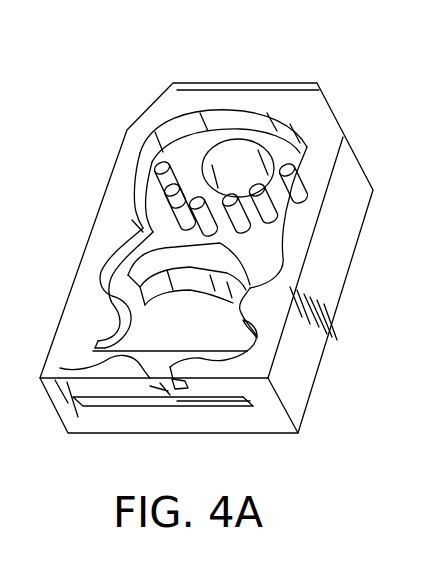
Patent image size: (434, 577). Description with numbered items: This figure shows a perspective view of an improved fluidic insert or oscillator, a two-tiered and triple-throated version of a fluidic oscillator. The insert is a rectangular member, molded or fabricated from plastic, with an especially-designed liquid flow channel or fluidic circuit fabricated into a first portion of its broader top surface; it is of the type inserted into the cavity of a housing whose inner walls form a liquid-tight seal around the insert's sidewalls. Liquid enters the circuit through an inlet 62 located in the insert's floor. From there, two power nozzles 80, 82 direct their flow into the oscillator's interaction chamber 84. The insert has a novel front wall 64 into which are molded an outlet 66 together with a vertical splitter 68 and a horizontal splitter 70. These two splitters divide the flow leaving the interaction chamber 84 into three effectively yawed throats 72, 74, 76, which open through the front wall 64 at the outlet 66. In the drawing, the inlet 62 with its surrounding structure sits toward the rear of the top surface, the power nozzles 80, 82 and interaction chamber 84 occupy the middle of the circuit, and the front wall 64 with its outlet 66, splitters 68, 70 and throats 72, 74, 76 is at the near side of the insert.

The inlet 62 is at (238, 155).
The front wall 64 is at (72, 373).
The outlet 66 is at (120, 357).
The vertical splitter 68 is at (112, 408).
The horizontal splitter 70 is at (173, 398).
The yawed throat 72 is at (183, 400).
The yawed throat 74 is at (143, 398).
The yawed throat 76 is at (243, 405).
The power nozzle 80 is at (250, 288).
The power nozzle 82 is at (120, 295).
The interaction chamber 84 is at (208, 337).